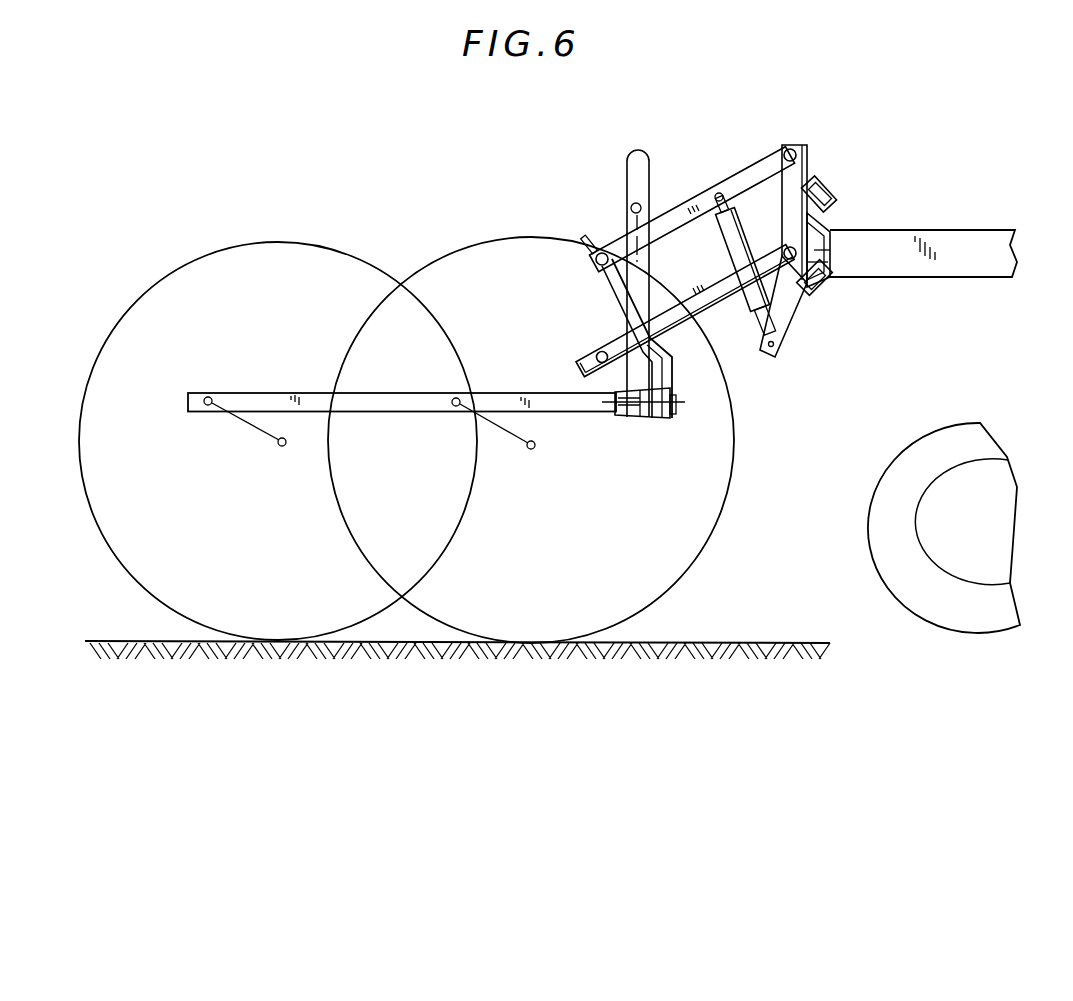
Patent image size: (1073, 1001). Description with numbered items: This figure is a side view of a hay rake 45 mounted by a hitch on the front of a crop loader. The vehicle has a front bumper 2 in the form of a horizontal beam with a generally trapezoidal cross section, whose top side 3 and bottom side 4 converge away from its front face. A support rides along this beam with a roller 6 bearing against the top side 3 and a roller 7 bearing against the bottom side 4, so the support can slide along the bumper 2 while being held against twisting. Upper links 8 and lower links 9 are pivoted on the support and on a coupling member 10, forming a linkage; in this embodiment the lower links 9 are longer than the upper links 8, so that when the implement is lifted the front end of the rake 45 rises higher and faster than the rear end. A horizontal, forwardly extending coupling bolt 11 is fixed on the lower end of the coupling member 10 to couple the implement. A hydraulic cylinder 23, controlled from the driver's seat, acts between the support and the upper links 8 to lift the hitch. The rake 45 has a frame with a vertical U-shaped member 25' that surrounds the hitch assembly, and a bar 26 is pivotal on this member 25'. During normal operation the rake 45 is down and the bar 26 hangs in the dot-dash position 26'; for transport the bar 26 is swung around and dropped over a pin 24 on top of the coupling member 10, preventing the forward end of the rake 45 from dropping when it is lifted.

The hay rake 45 is at (360, 238).
The vertical U-shaped member 25' is at (610, 282).
The bar 26 is at (606, 230).
The dot-dash line position 26' is at (649, 245).
The pin 24 is at (582, 252).
The upper links 8 is at (746, 178).
The hydraulic cylinder 23 is at (737, 224).
The roller 6 is at (813, 230).
The top side 3 is at (812, 238).
The front bumper 2 is at (826, 233).
The bottom side 4 is at (832, 260).
The roller 7 is at (821, 288).
The lower links 9 is at (714, 293).
The coupling member 10 is at (618, 288).
The coupling bolt 11 is at (652, 418).